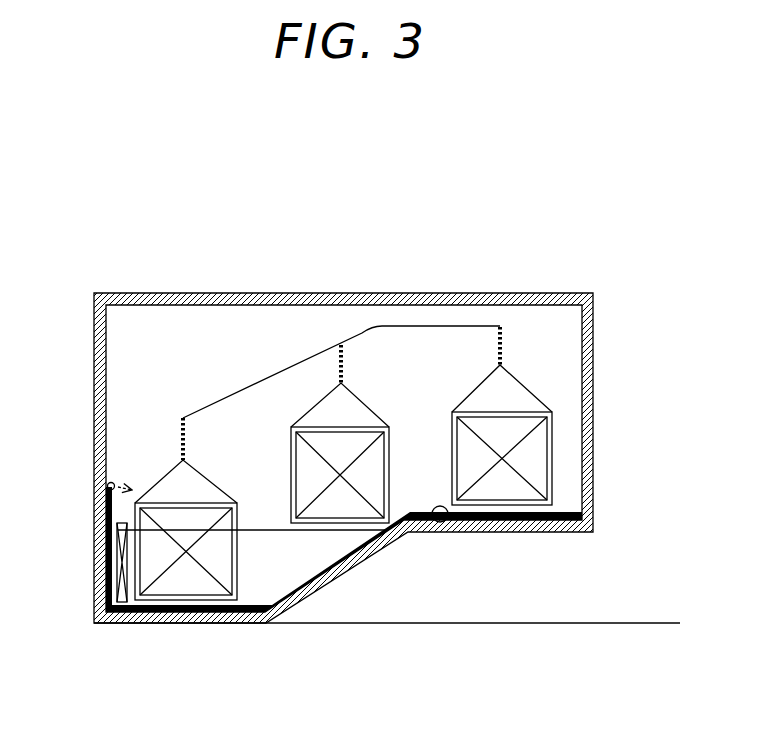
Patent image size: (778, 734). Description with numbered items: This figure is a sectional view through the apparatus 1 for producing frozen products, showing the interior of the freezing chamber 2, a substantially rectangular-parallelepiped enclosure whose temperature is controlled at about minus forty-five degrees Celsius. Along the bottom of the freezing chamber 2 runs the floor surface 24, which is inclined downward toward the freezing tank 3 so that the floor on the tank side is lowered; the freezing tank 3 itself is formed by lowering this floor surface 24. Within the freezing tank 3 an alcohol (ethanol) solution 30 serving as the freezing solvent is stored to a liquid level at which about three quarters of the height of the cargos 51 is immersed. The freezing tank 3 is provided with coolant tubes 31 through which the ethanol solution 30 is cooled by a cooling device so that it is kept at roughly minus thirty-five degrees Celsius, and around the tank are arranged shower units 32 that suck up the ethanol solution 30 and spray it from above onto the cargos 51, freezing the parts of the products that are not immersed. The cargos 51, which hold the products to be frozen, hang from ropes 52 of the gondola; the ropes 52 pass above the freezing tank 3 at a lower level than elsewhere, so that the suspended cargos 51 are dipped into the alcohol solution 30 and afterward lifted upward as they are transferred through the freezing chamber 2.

The apparatus for producing frozen products 1 is at (493, 144).
The freezing chamber 2 is at (580, 350).
The freezing tank 3 is at (236, 455).
The floor surface 24 is at (455, 528).
The alcohol (ethanol) solution 30 is at (248, 530).
The coolant tubes 31 is at (129, 612).
The shower units 32 is at (108, 485).
The cargos 51 is at (399, 445).
The ropes 52 is at (272, 377).